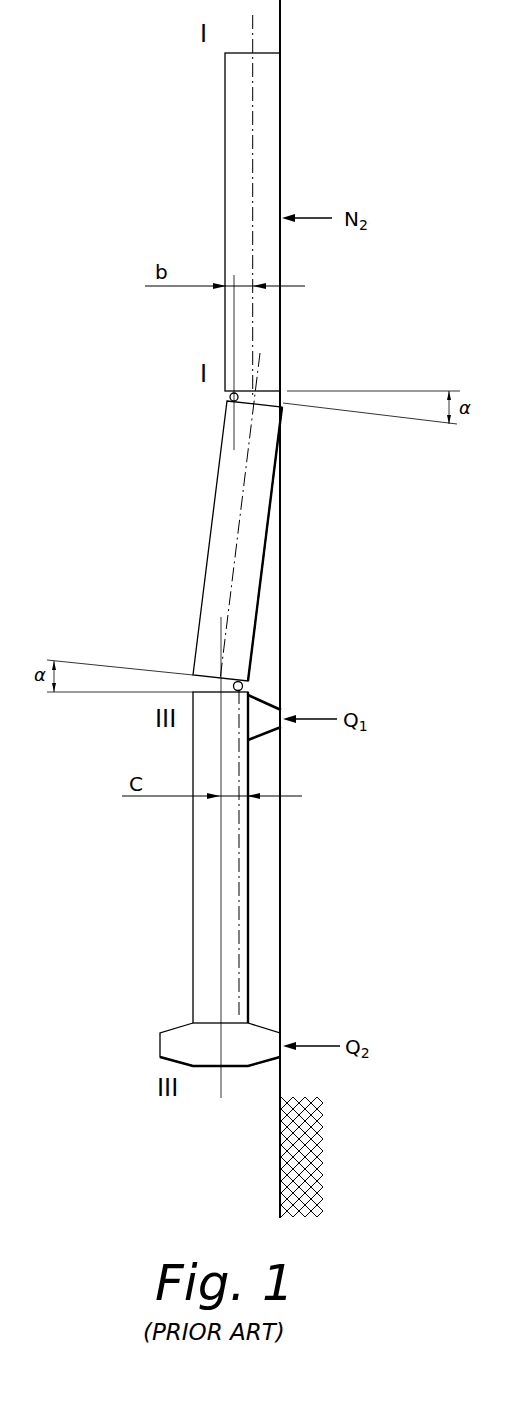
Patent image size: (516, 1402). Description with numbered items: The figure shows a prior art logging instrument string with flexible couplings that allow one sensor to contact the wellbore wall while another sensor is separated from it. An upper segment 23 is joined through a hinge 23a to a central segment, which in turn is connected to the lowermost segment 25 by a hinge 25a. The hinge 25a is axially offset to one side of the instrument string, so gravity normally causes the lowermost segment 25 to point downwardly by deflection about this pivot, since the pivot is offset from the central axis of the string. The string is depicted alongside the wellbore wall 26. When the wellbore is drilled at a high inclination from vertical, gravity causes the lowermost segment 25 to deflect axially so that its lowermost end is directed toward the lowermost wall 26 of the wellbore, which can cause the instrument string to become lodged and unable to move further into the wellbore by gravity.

The upper pile segment 23 is at (253, 195).
The upper hinge joint 23a is at (229, 397).
The lower pile segment 25 is at (221, 826).
The hinge 25a is at (243, 688).
The wall 26 is at (282, 129).